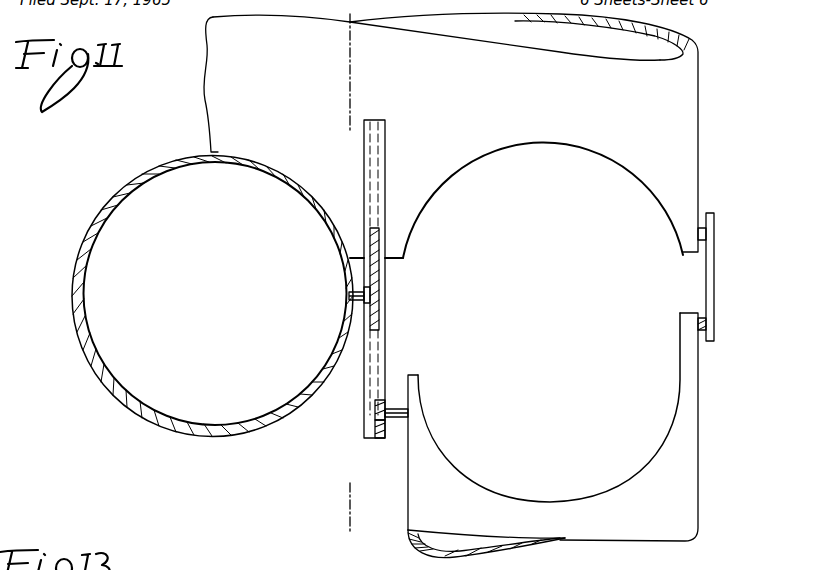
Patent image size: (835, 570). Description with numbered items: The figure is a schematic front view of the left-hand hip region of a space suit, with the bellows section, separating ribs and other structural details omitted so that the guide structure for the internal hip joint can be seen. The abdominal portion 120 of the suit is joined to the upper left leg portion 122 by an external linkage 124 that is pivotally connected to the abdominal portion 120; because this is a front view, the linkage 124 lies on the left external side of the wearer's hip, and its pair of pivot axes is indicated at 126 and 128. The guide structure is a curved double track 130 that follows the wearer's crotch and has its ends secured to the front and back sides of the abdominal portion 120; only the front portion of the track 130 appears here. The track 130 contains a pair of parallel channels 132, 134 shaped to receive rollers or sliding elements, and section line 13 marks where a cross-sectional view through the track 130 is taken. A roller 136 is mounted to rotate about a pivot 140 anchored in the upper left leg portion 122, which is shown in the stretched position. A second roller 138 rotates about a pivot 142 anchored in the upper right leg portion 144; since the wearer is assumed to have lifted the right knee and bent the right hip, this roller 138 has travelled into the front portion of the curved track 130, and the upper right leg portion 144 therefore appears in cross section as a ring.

The section line 13- 13 is at (346, 33).
The abdominal portion 120 is at (386, 76).
The upper left leg portion 122 is at (558, 530).
The external linkage 124 is at (714, 306).
The pivot axis 126 is at (702, 228).
The pivot axis 128 is at (702, 340).
The curved double track 130 is at (385, 172).
The channel 132 is at (369, 380).
The channel 134 is at (380, 378).
The roller 136 is at (385, 405).
The roller 138 is at (352, 301).
The pivot 140 is at (384, 432).
The pivot 142 is at (352, 292).
The upper right leg portion 144 is at (305, 396).